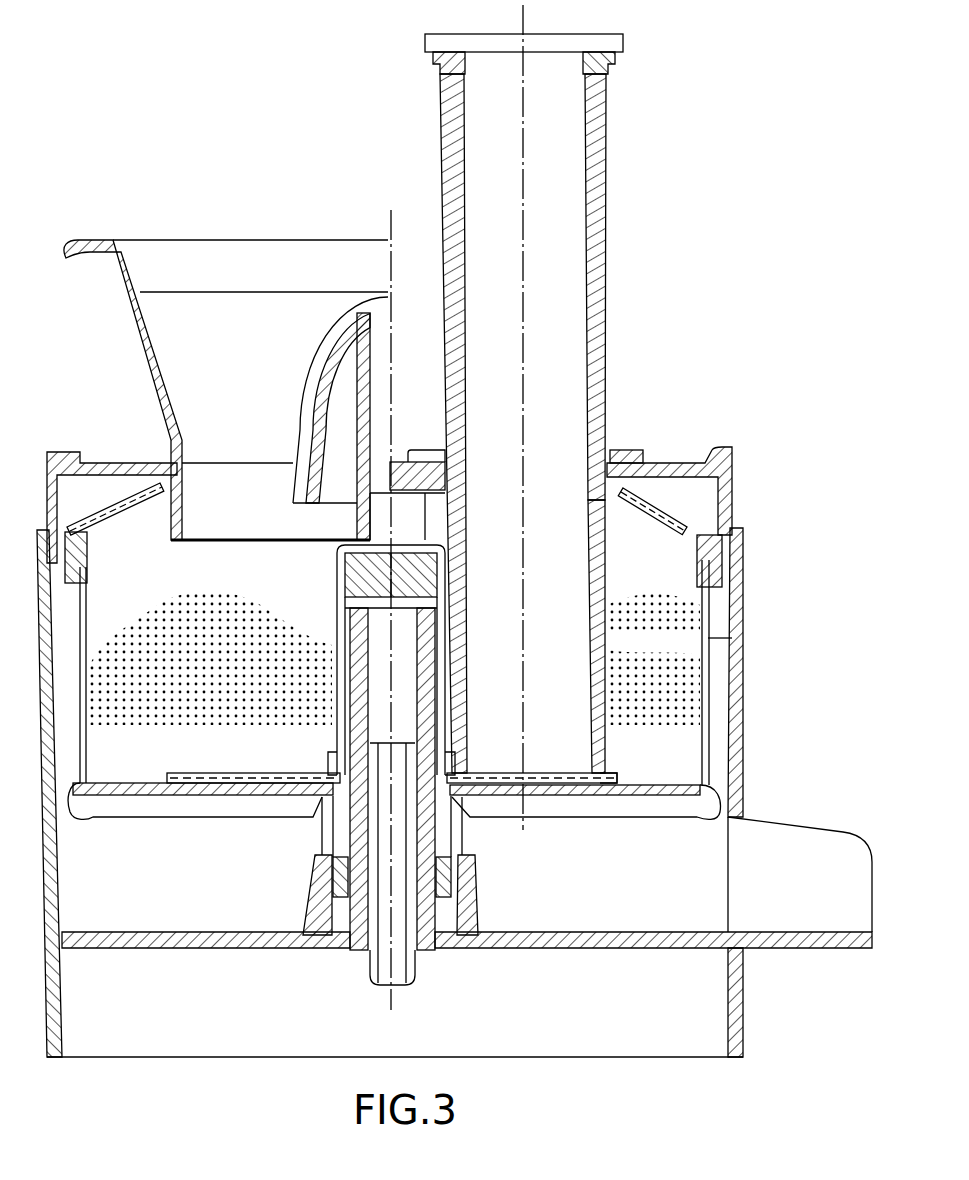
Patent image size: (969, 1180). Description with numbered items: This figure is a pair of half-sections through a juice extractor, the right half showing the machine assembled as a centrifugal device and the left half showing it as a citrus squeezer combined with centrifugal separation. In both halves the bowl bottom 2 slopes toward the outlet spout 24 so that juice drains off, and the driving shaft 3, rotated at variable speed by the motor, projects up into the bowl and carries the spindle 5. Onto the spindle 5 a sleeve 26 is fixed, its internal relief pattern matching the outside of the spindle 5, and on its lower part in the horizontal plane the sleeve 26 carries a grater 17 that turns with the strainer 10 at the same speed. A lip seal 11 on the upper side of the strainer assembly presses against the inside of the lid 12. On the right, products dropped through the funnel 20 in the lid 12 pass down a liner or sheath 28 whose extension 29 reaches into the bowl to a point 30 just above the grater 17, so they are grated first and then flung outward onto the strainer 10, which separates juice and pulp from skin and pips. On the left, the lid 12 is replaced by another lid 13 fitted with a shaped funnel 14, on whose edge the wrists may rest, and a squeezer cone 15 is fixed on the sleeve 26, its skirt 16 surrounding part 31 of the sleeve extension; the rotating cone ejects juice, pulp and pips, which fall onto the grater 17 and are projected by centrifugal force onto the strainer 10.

The bowl bottom 2 is at (183, 930).
The driving shaft 3 is at (415, 968).
The spindle 5 is at (437, 665).
The strainer 10 is at (733, 645).
The lip seal 11 is at (668, 507).
The lid 12 is at (665, 450).
The lid 13 is at (125, 460).
The shaped funnel 14 is at (103, 247).
The squeezer cone 15 is at (340, 337).
The skirt 16 is at (358, 518).
The grater 17 is at (212, 772).
The funnel 20 is at (607, 135).
The outlet spout 24 is at (772, 865).
The sleeve 26 is at (345, 700).
The liner or sheath 28 is at (595, 220).
The sheath extension 29 is at (606, 604).
The end point of sheath extension 30 is at (606, 772).
The sleeve extension part 31 is at (367, 570).